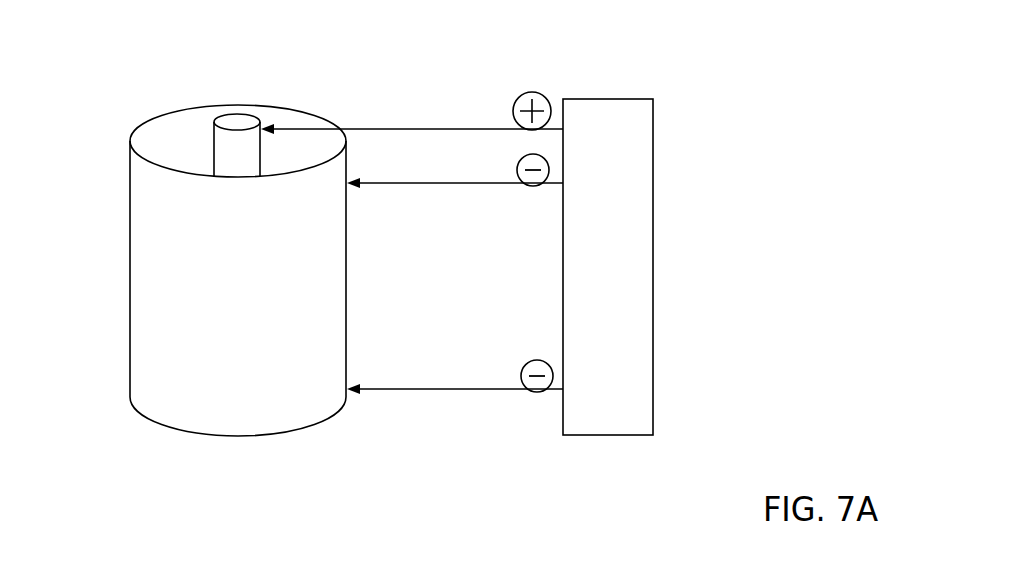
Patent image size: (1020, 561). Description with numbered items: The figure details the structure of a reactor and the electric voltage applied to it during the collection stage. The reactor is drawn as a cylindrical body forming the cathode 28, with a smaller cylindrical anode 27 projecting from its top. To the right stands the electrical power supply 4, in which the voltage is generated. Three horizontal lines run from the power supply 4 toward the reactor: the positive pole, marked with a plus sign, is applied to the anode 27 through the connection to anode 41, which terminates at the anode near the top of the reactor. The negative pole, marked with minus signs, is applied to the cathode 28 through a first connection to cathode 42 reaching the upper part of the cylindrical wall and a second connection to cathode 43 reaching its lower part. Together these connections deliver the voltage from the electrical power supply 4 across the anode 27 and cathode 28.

The electrical power supply 4 is at (647, 152).
The anode 27 is at (217, 138).
The cathode 28 is at (132, 200).
The connection to anode 41 is at (307, 130).
The first connection to cathode 42 is at (392, 182).
The second connection to cathode 43 is at (392, 388).